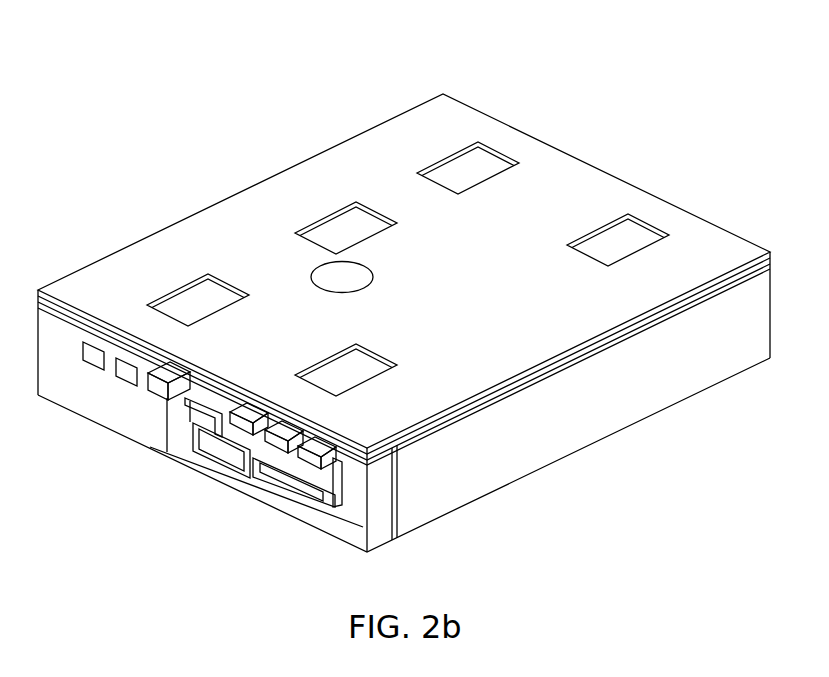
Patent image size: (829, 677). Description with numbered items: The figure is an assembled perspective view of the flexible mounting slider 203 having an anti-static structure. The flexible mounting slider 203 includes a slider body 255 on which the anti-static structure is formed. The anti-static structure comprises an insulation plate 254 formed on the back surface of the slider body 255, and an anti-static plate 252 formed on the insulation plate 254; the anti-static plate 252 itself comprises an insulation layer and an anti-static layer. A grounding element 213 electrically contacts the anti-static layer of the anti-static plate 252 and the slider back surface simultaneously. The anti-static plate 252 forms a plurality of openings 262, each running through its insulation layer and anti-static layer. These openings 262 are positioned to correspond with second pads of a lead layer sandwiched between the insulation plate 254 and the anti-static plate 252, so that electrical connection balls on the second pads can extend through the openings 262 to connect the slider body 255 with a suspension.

The flexible mounting slider 203 is at (419, 297).
The anti-static plate 252 is at (404, 232).
The insulation plate 254 is at (552, 373).
The slider body 255 is at (688, 367).
The openings 262 is at (470, 166).
The grounding element 213 is at (347, 278).